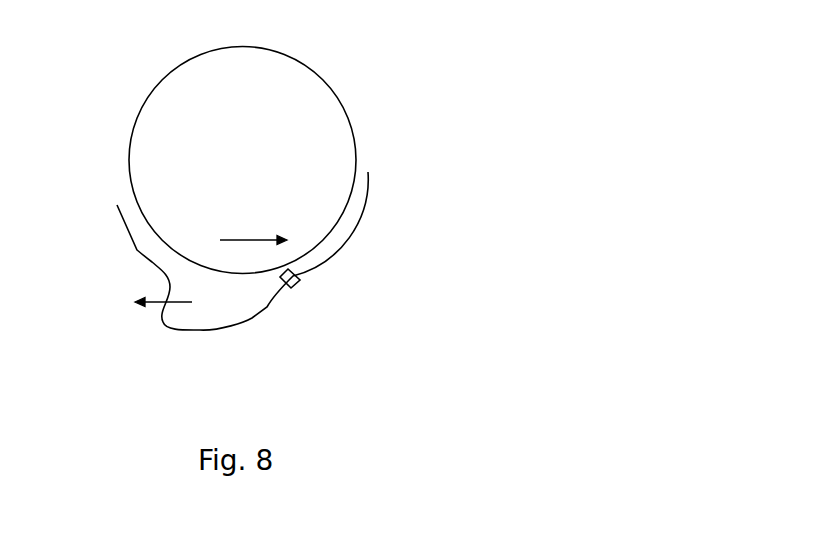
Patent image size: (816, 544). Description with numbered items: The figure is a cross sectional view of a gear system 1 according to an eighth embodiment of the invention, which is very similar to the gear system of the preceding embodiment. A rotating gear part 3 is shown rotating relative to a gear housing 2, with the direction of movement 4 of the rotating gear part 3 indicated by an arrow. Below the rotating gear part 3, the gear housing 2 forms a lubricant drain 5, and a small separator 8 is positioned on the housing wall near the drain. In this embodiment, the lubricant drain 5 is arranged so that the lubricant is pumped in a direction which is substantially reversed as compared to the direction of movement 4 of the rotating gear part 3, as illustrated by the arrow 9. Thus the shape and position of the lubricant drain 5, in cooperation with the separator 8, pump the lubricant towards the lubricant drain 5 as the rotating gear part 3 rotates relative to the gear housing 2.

The gear system 1 is at (413, 42).
The gear housing 2 is at (345, 242).
The rotating gear part 3 is at (137, 115).
The direction of movement 4 is at (242, 240).
The lubricant drain 5 is at (178, 314).
The separator 8 is at (300, 278).
The arrow 9 is at (158, 299).